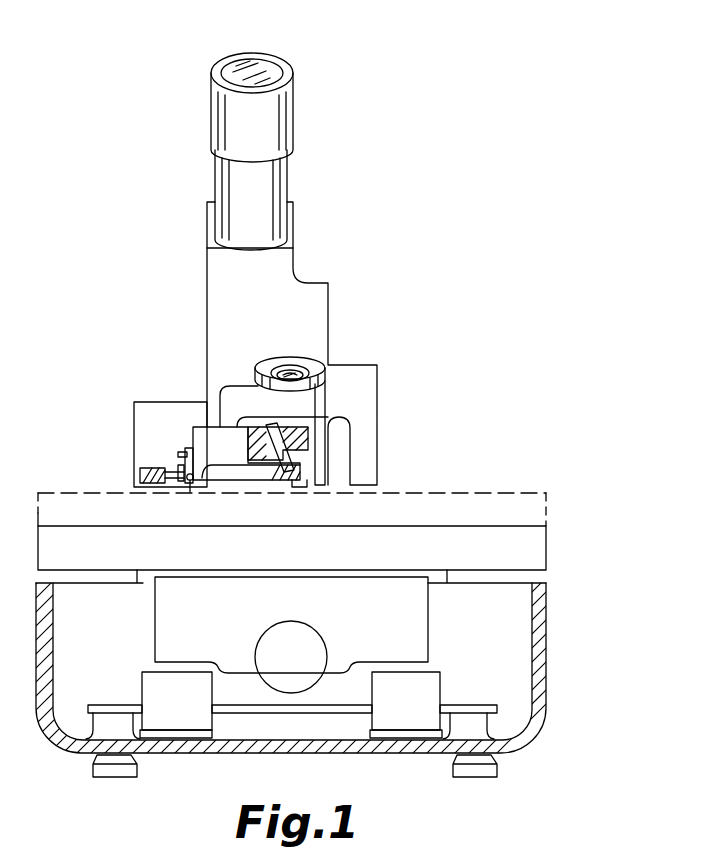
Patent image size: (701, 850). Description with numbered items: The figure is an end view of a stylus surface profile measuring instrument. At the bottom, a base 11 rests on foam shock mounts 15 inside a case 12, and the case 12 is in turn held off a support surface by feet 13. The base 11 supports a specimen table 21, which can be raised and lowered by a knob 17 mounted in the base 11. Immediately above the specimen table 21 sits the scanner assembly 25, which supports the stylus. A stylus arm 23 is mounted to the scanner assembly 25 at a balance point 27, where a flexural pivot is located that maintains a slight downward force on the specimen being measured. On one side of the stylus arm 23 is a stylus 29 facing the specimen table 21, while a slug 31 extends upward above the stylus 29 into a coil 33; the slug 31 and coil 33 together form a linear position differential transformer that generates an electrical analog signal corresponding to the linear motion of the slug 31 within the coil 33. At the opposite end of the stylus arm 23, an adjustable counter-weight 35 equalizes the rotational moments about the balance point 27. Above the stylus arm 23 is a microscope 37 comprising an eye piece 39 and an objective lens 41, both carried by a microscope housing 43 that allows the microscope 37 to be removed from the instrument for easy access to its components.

The base 11 is at (393, 632).
The case 12 is at (548, 692).
The feet 13 is at (92, 768).
The foam shock mounts 15 is at (187, 718).
The knob 17 is at (302, 668).
The specimen table 21 is at (548, 494).
The stylus arm 23 is at (210, 478).
The scanner assembly 25 is at (160, 401).
The balance point 27 is at (190, 484).
The stylus 29 is at (302, 487).
The slug 31 is at (300, 468).
The coil 33 is at (305, 457).
The adjustable counter-weight 35 is at (140, 470).
The microscope 37 is at (181, 146).
The eye piece 39 is at (284, 62).
The objective lens 41 is at (296, 379).
The microscope housing 43 is at (320, 300).